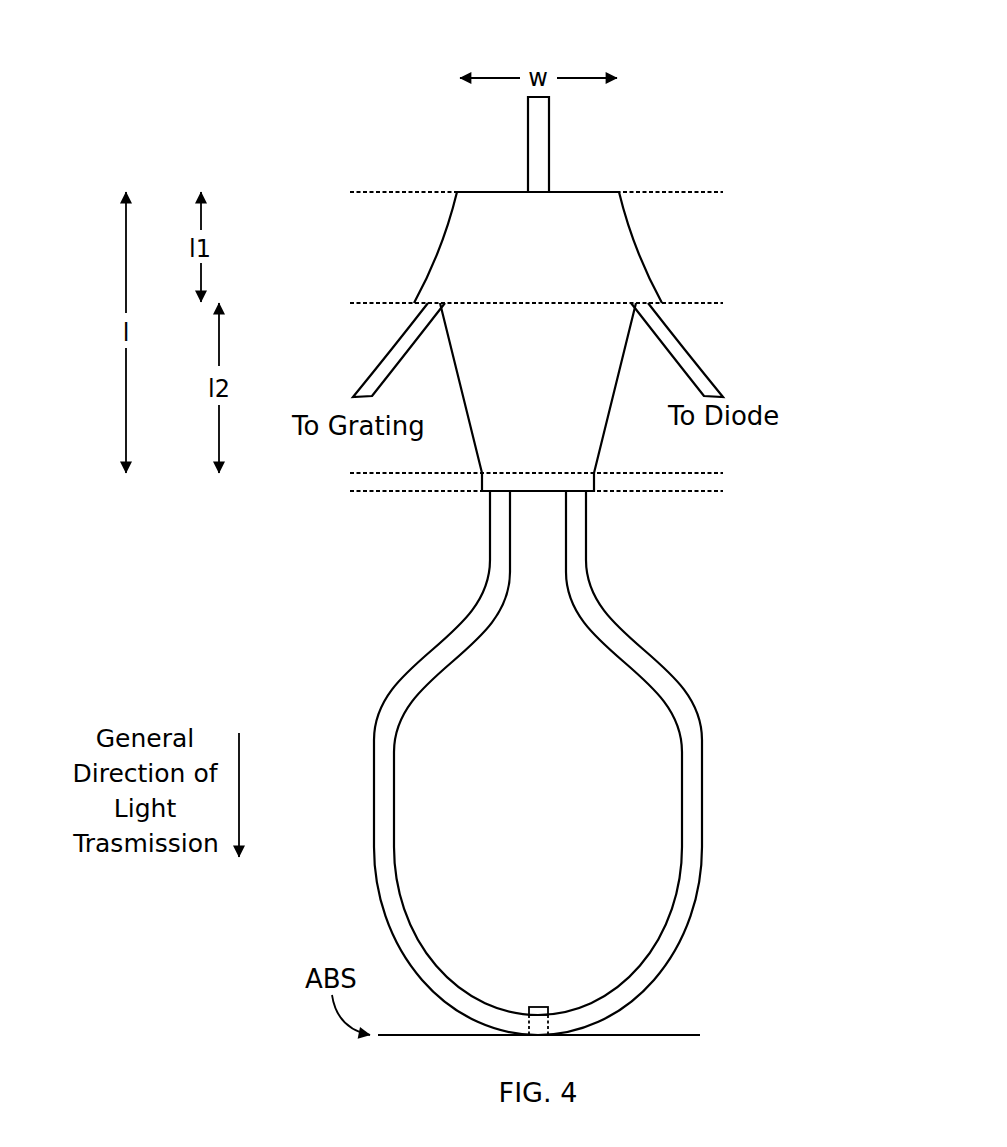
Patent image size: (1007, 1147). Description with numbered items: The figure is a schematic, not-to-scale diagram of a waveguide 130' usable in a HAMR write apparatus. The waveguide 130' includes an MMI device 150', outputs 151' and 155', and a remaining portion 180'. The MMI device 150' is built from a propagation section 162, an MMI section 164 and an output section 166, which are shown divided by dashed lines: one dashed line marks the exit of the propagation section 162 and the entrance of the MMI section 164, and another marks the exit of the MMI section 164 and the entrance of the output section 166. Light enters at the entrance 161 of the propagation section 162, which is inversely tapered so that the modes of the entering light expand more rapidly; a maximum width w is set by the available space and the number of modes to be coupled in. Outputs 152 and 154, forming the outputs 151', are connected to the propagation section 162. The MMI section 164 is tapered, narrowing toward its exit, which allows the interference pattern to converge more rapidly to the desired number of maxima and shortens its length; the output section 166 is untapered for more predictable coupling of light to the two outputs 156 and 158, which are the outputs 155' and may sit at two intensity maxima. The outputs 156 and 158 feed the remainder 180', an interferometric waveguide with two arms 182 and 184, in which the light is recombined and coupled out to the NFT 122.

The waveguide 130' is at (542, 521).
The entrance 161 is at (557, 172).
The MMI device 150' is at (466, 247).
The propagation section 162 is at (538, 247).
The outputs 151' is at (582, 379).
The MMI section 164 is at (538, 388).
The output 152 is at (408, 323).
The output 154 is at (664, 322).
The outputs 155' is at (623, 612).
The output section 166 is at (595, 484).
The output 156 is at (490, 507).
The output 158 is at (586, 508).
The remainder of the waveguide 180' is at (492, 834).
The arm 182 is at (382, 708).
The arm 184 is at (702, 760).
The NFT 122 is at (536, 1006).